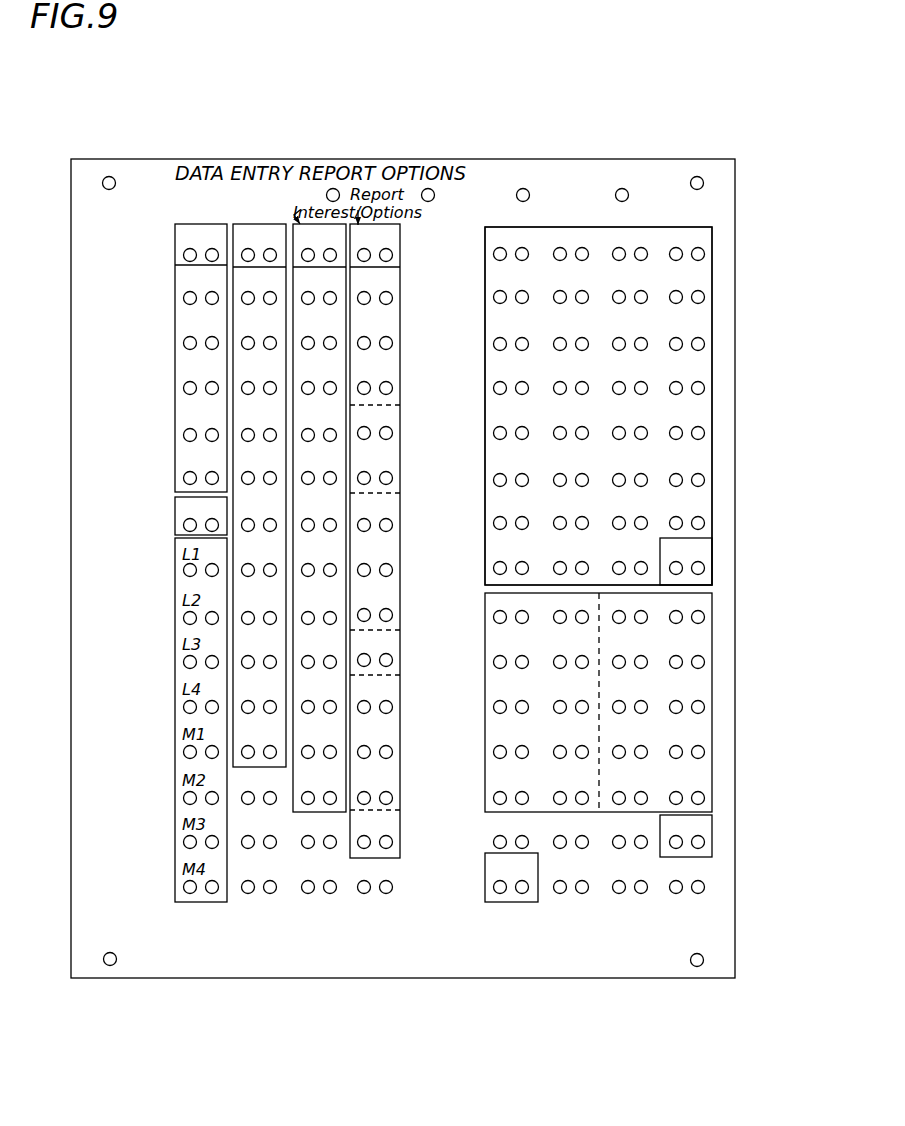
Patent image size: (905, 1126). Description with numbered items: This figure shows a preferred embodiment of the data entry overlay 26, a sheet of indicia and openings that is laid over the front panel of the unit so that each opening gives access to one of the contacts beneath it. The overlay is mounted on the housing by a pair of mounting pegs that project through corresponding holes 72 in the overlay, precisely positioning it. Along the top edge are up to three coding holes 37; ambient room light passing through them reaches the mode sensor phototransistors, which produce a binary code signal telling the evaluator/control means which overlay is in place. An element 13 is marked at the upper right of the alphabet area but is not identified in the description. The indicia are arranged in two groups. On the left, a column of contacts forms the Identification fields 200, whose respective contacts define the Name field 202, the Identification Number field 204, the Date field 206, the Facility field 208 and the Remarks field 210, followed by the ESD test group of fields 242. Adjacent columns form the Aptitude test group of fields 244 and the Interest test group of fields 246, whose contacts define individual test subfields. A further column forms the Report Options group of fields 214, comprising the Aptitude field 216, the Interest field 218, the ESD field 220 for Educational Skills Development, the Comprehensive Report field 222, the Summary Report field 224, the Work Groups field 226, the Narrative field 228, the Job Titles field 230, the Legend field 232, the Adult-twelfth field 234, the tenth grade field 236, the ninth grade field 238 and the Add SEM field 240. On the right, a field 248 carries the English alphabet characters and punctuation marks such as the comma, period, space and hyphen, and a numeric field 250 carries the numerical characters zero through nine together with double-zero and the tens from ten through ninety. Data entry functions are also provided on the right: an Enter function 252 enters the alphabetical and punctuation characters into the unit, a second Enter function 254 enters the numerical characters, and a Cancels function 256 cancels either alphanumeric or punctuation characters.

The holes 72 is at (111, 176).
The holes 37 is at (326, 195).
The data entry sheet 13 is at (599, 396).
The field of English alphabet characters and punctuation marks 248 is at (597, 228).
The data entry overlay 26 is at (441, 250).
The Identification fields 200 is at (228, 224).
The Name field 202 is at (223, 291).
The Identification Number field 204 is at (223, 336).
The Date field 206 is at (223, 381).
The Facility field 208 is at (223, 428).
The Remarks field 210 is at (223, 471).
The ESD test group of fields 242 is at (130, 524).
The Aptitude test group of fields 244 is at (258, 196).
The Interest test group of fields 246 is at (342, 249).
The Report Options group of fields 214 is at (397, 249).
The Aptitude field 216 is at (446, 276).
The Interest field 218 is at (450, 320).
The ESD field 220 is at (440, 366).
The Comprehensive Report field 222 is at (397, 426).
The Summary Report field 224 is at (412, 452).
The Work Groups field 226 is at (420, 516).
The Narrative field 228 is at (430, 548).
The Job Titles field 230 is at (420, 598).
The Legend field 232 is at (440, 642).
The Adult-12th field 234 is at (430, 682).
The 10th Grade field 236 is at (425, 730).
The 9th grade field 238 is at (425, 776).
The Add SEM field 240 is at (435, 818).
The numeric field 250 is at (676, 644).
The Enter function 252 is at (742, 566).
The Enter function 254 is at (742, 828).
The Cancels function 256 is at (533, 877).